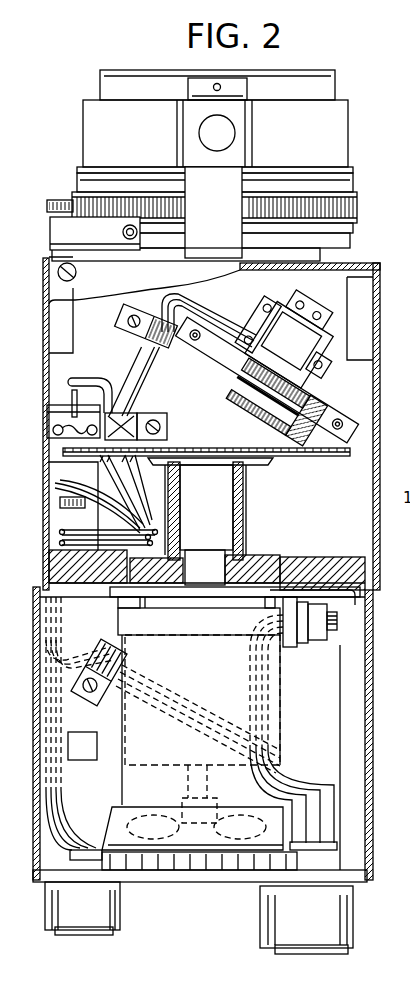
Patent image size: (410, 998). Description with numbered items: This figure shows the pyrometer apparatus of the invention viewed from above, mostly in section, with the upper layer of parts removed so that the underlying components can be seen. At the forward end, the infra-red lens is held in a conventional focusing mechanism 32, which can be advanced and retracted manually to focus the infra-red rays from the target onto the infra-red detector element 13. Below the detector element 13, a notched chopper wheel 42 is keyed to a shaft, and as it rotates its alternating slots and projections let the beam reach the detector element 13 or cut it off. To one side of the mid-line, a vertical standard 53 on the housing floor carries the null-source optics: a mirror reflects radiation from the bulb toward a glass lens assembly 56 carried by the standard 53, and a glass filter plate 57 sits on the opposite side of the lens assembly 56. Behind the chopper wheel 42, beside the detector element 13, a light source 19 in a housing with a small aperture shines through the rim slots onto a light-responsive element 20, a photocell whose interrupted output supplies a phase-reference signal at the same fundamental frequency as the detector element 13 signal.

The infra-red detector element 13 is at (222, 500).
The light source 19 is at (68, 472).
The light-responsive element 20 is at (72, 440).
The focusing mechanism 32 is at (357, 213).
The chopper wheel 42 is at (330, 463).
The vertical standard 53 is at (323, 411).
The glass lens assembly 56 is at (270, 368).
The glass filter plate 57 is at (250, 407).